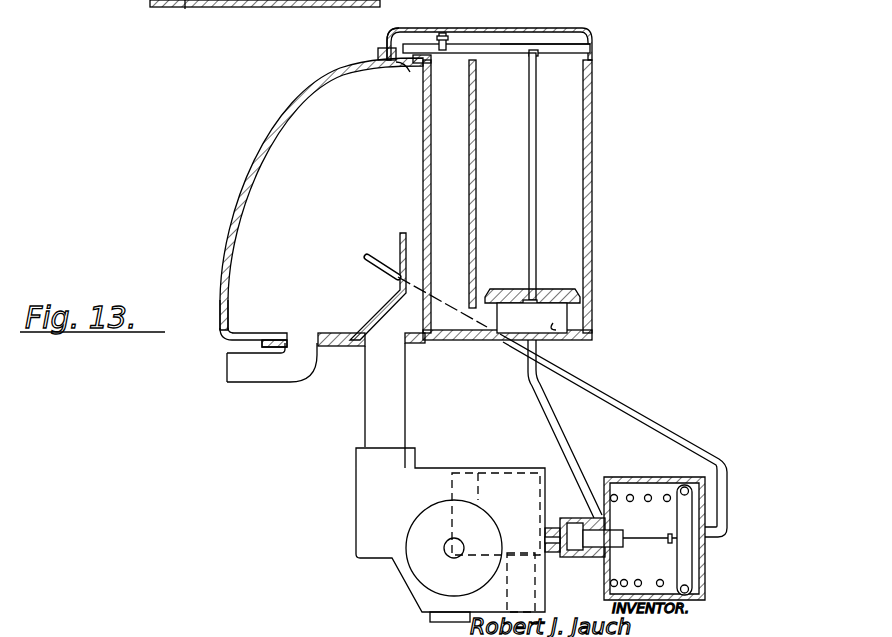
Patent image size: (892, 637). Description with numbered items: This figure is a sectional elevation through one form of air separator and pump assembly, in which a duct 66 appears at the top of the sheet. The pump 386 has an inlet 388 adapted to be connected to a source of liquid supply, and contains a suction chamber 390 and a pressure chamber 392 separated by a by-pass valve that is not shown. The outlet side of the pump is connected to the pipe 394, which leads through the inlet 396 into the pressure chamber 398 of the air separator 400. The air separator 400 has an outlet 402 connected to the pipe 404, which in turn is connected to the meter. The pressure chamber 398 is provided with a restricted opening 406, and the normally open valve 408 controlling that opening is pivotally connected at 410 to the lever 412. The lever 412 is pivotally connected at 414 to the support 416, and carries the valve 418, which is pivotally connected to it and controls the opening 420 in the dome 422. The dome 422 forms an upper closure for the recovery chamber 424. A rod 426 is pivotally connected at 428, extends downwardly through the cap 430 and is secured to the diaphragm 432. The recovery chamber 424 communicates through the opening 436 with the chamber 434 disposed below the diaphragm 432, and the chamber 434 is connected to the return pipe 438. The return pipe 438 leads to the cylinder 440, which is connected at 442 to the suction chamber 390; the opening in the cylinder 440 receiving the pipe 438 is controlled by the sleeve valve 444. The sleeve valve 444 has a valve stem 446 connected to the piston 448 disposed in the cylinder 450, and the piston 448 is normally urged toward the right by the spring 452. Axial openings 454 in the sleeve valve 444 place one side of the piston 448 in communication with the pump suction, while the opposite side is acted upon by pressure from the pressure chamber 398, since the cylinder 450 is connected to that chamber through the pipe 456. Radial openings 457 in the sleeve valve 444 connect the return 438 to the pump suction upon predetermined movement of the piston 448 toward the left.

The duct 66 is at (185, 8).
The pump 386 is at (368, 528).
The inlet 388 is at (410, 612).
The suction chamber 390 is at (513, 473).
The pressure chamber 392 is at (450, 470).
The pipe 394 is at (370, 420).
The inlet 396 is at (418, 343).
The pressure chamber 398 is at (252, 163).
The air separator 400 is at (225, 225).
The outlet 402 is at (333, 350).
The pipe 404 is at (252, 370).
The restricted opening 406 is at (410, 60).
The normally open valve 408 is at (394, 52).
The pivotal connection 410 is at (402, 30).
The lever 412 is at (540, 30).
The pivotal connection 414 is at (442, 32).
The support 416 is at (432, 68).
The valve 418 is at (505, 50).
The opening 420 is at (440, 46).
The dome 422 is at (592, 36).
The recovery chamber 424 is at (430, 185).
The rod 426 is at (536, 135).
The pivotal connection 428 is at (592, 47).
The cap 430 is at (547, 293).
The diaphragm 432 is at (570, 297).
The chamber 434 is at (555, 325).
The opening 436 is at (483, 340).
The return pipe 438 is at (540, 380).
The cylinder 440 is at (582, 520).
The connection 442 is at (553, 537).
The sleeve valve 444 is at (610, 548).
The valve stem 446 is at (633, 538).
The piston 448 is at (688, 568).
The cylinder 450 is at (702, 563).
The spring 452 is at (628, 477).
The axial openings 454 is at (640, 518).
The pipe 456 is at (663, 425).
The radial openings 457 is at (585, 550).